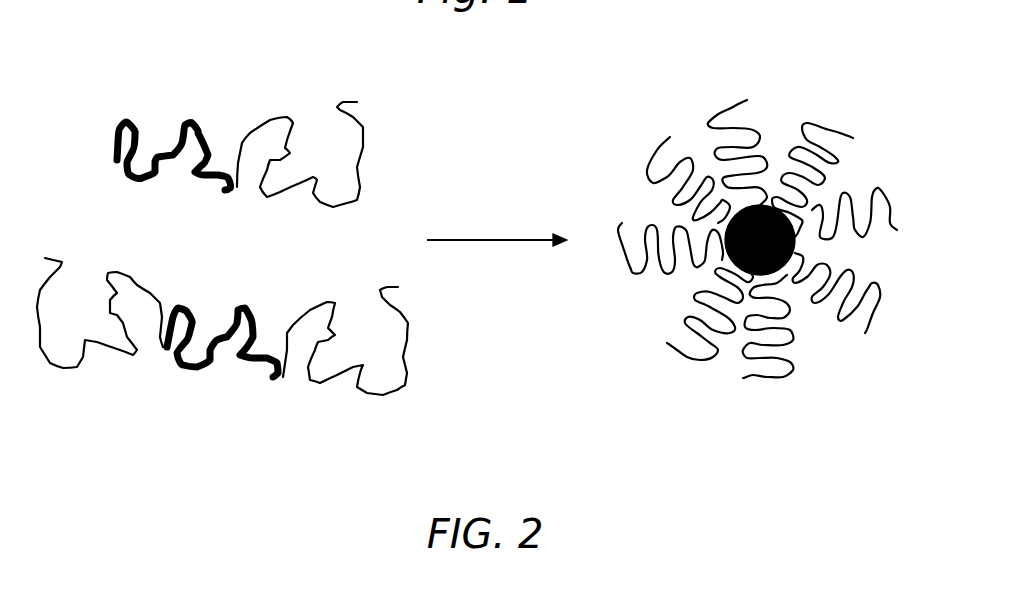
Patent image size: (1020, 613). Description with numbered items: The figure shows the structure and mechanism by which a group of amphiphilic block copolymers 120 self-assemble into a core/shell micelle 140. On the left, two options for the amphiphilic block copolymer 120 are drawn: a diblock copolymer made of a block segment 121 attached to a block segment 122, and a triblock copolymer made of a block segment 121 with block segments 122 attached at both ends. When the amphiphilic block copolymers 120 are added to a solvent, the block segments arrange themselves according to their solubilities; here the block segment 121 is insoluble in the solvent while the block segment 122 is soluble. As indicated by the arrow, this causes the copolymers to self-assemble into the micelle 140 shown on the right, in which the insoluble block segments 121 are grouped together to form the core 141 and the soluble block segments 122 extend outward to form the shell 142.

The amphiphilic block copolymer 120 is at (219, 99).
The block segment 121 is at (228, 203).
The block segment 122 is at (238, 203).
The core/shell micelle 140 is at (650, 378).
The core 141 is at (737, 212).
The shell 142 is at (723, 382).